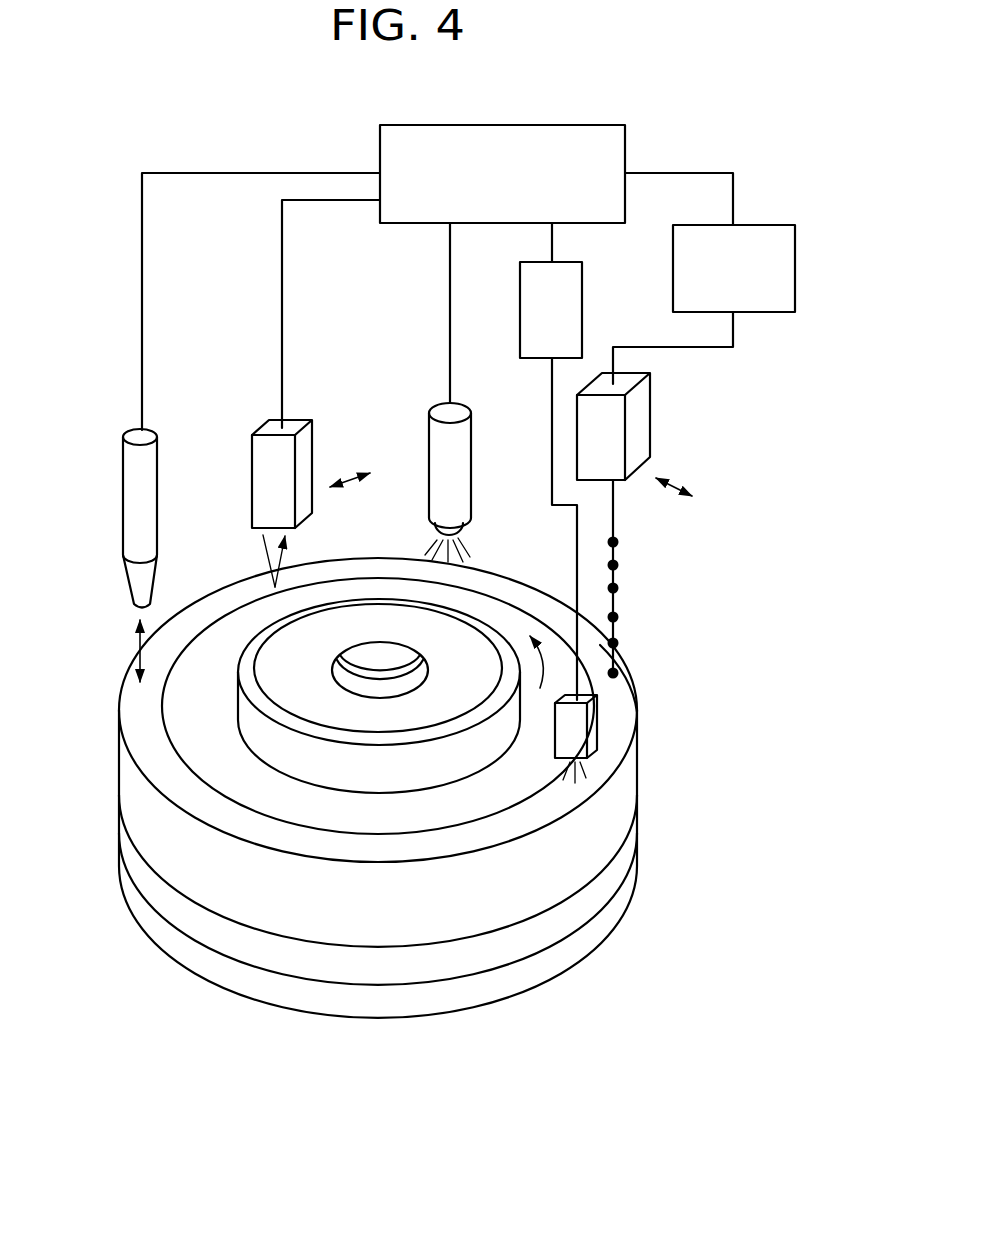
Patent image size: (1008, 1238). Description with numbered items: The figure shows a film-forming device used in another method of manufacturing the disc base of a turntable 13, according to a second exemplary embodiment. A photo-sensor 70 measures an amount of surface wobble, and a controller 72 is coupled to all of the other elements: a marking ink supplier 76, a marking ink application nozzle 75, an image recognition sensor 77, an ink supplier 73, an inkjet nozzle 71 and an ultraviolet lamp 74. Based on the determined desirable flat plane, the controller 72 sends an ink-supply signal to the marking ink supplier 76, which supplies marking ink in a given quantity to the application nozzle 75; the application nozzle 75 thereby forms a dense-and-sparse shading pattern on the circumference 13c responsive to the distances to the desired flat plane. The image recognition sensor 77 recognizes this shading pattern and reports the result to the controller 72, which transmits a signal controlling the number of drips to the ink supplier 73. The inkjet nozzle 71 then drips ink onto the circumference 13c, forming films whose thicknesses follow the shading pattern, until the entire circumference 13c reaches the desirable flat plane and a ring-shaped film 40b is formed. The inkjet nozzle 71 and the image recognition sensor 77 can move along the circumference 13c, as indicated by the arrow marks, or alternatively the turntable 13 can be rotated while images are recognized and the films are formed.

The controller 72 is at (552, 145).
The ink supplier 73 is at (795, 255).
The marking ink supplier 76 is at (578, 317).
The inkjet nozzle 71 is at (643, 433).
The ultraviolet lamp 74 is at (467, 468).
The photo-sensor 70 is at (150, 478).
The image recognition sensor 77 is at (307, 467).
The ring-shaped film 40b is at (543, 603).
The circumference 13c is at (638, 687).
The marking ink application nozzle 75 is at (595, 717).
The turntable 13 is at (475, 797).